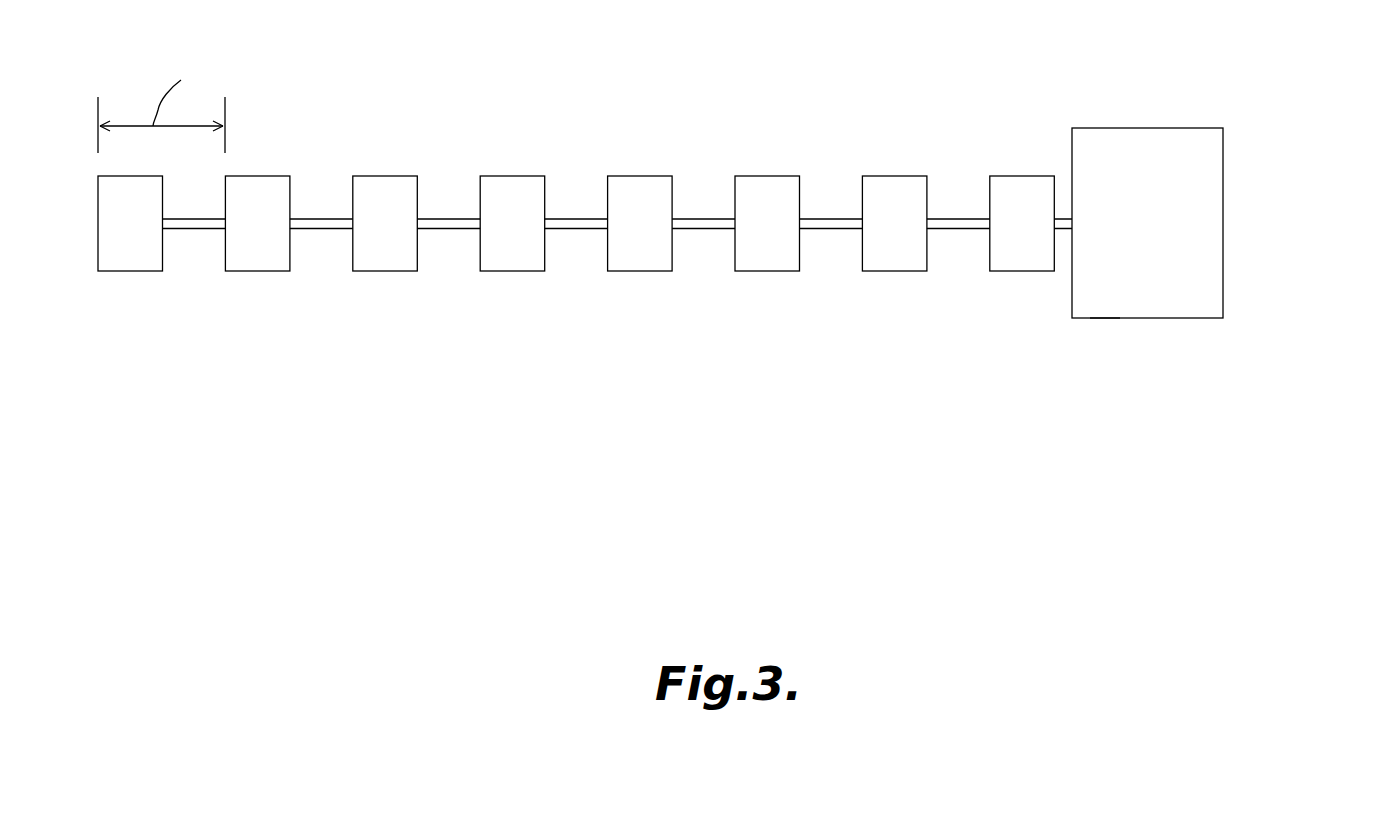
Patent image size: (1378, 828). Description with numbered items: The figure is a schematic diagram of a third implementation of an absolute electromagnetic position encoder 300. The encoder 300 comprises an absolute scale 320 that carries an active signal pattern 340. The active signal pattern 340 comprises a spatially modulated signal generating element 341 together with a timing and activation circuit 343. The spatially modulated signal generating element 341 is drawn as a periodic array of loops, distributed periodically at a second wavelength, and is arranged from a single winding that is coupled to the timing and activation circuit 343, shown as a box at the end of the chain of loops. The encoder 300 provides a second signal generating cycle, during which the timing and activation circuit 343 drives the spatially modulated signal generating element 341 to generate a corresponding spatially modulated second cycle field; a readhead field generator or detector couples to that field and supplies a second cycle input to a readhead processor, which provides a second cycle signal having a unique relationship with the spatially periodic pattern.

The absolute electromagnetic position encoder 300 is at (1092, 62).
The absolute scale 320 is at (1232, 217).
The active signal pattern 340 is at (585, 194).
The spatially modulated signal generating element 341 is at (623, 176).
The timing and activation circuit 343 is at (1105, 318).